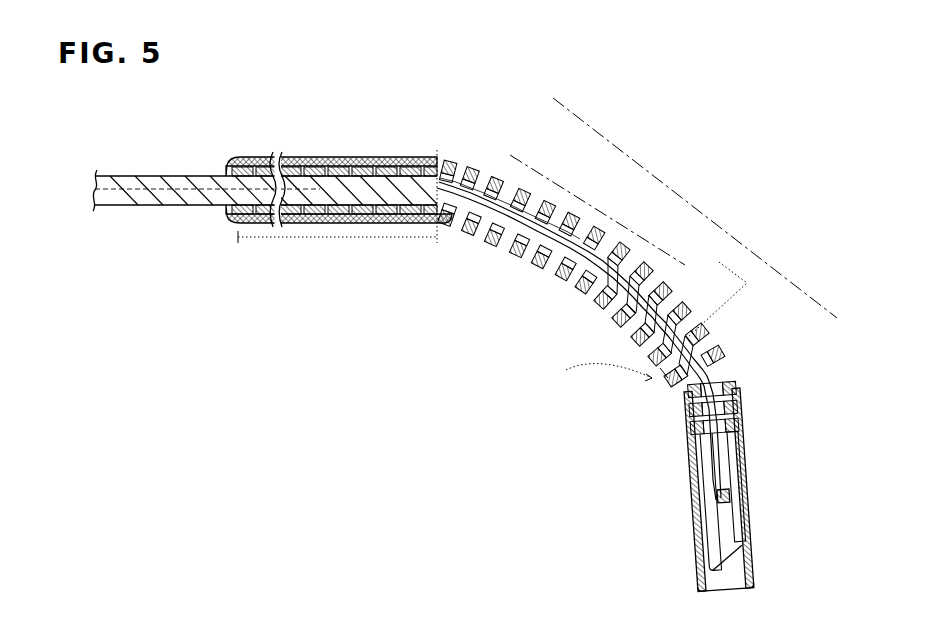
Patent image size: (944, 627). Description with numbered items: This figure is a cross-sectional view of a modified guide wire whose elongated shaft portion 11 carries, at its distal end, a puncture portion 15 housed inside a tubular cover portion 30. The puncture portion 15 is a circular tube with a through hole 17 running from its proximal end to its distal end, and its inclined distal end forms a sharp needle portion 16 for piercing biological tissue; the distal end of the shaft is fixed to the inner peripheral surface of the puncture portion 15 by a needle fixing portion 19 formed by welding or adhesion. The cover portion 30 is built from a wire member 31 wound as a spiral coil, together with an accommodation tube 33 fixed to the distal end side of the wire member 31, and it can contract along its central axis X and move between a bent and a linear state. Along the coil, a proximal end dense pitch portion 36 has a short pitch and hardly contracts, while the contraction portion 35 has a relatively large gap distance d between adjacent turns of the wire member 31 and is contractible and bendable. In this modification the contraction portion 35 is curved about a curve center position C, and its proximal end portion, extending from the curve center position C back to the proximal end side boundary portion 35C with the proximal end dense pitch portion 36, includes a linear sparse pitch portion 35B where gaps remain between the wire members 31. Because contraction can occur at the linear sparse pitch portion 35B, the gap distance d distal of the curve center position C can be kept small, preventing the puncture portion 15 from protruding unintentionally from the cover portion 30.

The shaft portion 11 is at (165, 175).
The central axis X is at (202, 180).
The cover portion 30 is at (333, 157).
The wire member 31 is at (386, 165).
The proximal end dense pitch portion 36 is at (337, 213).
The contraction portion 35 is at (634, 242).
The linear sparse pitch portion 35B is at (604, 271).
The proximal end side boundary portion 35C is at (438, 242).
The curve center position C is at (717, 287).
The gap distance d is at (609, 376).
The accommodation tube 33 is at (748, 442).
The puncture portion 15 is at (693, 515).
The needle portion 16 is at (735, 571).
The through hole 17 is at (736, 487).
The needle fixing portion 19 is at (690, 478).